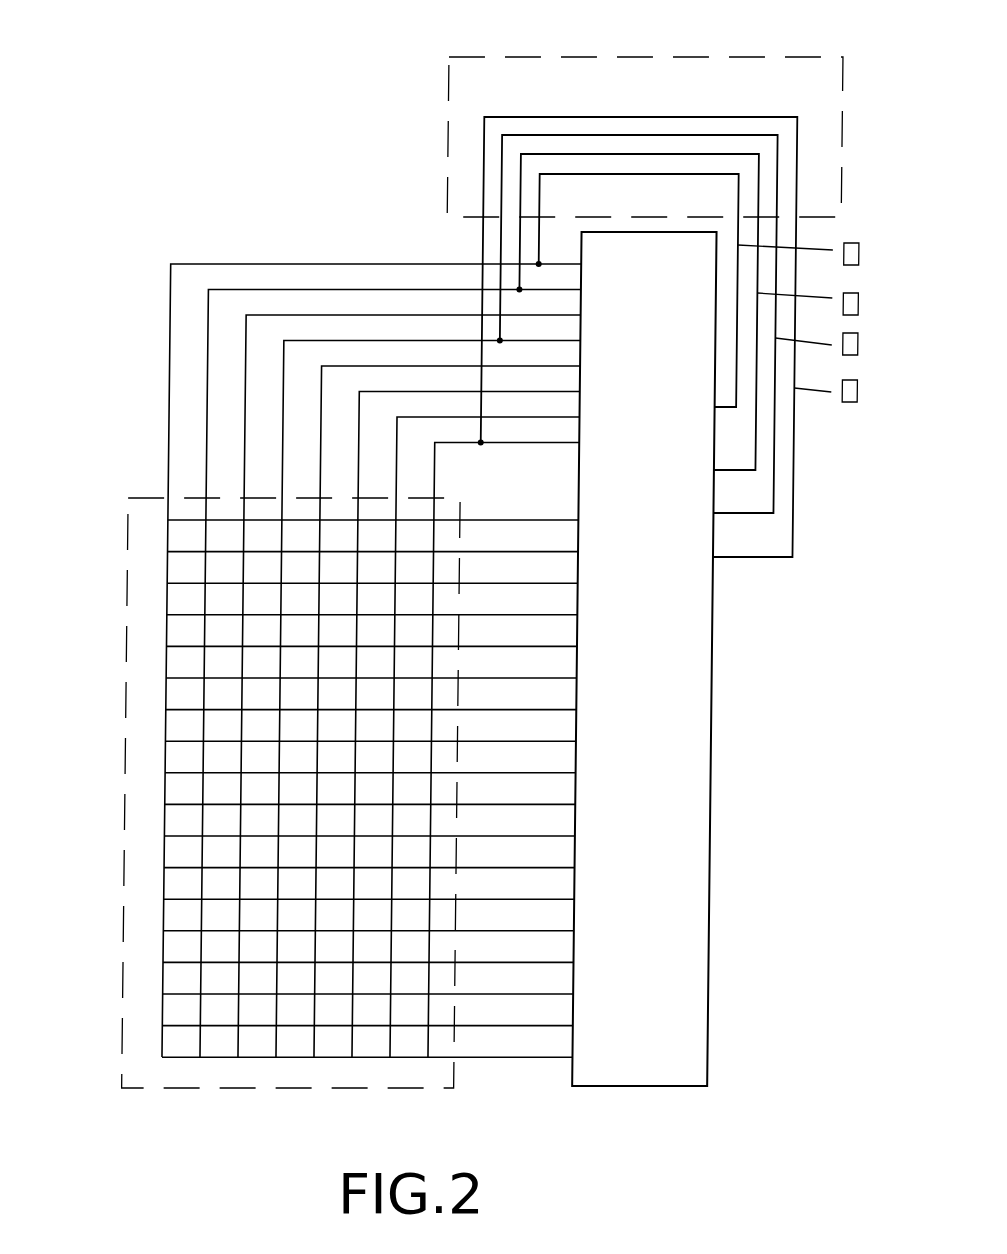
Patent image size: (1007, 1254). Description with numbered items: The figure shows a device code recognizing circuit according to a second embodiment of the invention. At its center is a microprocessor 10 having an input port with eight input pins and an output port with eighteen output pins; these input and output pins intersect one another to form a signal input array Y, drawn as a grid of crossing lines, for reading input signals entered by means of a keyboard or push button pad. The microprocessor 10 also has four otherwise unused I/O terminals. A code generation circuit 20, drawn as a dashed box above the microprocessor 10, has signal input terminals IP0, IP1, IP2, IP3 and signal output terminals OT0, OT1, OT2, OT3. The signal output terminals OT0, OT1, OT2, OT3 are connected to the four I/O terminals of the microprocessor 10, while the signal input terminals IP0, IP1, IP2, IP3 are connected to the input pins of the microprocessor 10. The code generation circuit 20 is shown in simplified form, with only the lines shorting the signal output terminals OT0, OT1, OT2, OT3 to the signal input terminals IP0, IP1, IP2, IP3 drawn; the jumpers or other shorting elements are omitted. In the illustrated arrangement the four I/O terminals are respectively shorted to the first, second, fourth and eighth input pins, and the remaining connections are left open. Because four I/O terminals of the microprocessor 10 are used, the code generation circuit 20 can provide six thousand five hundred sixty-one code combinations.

The microprocessor 10 is at (693, 702).
The code generation circuit 20 is at (671, 57).
The signal input array Y is at (125, 582).
The signal input terminal IP0 is at (608, 174).
The signal input terminal IP1 is at (549, 154).
The signal input terminal IP2 is at (478, 192).
The signal input terminal IP3 is at (497, 147).
The signal output terminal OT0 is at (820, 255).
The signal output terminal OT1 is at (829, 305).
The signal output terminal OT2 is at (838, 345).
The signal output terminal OT3 is at (847, 392).